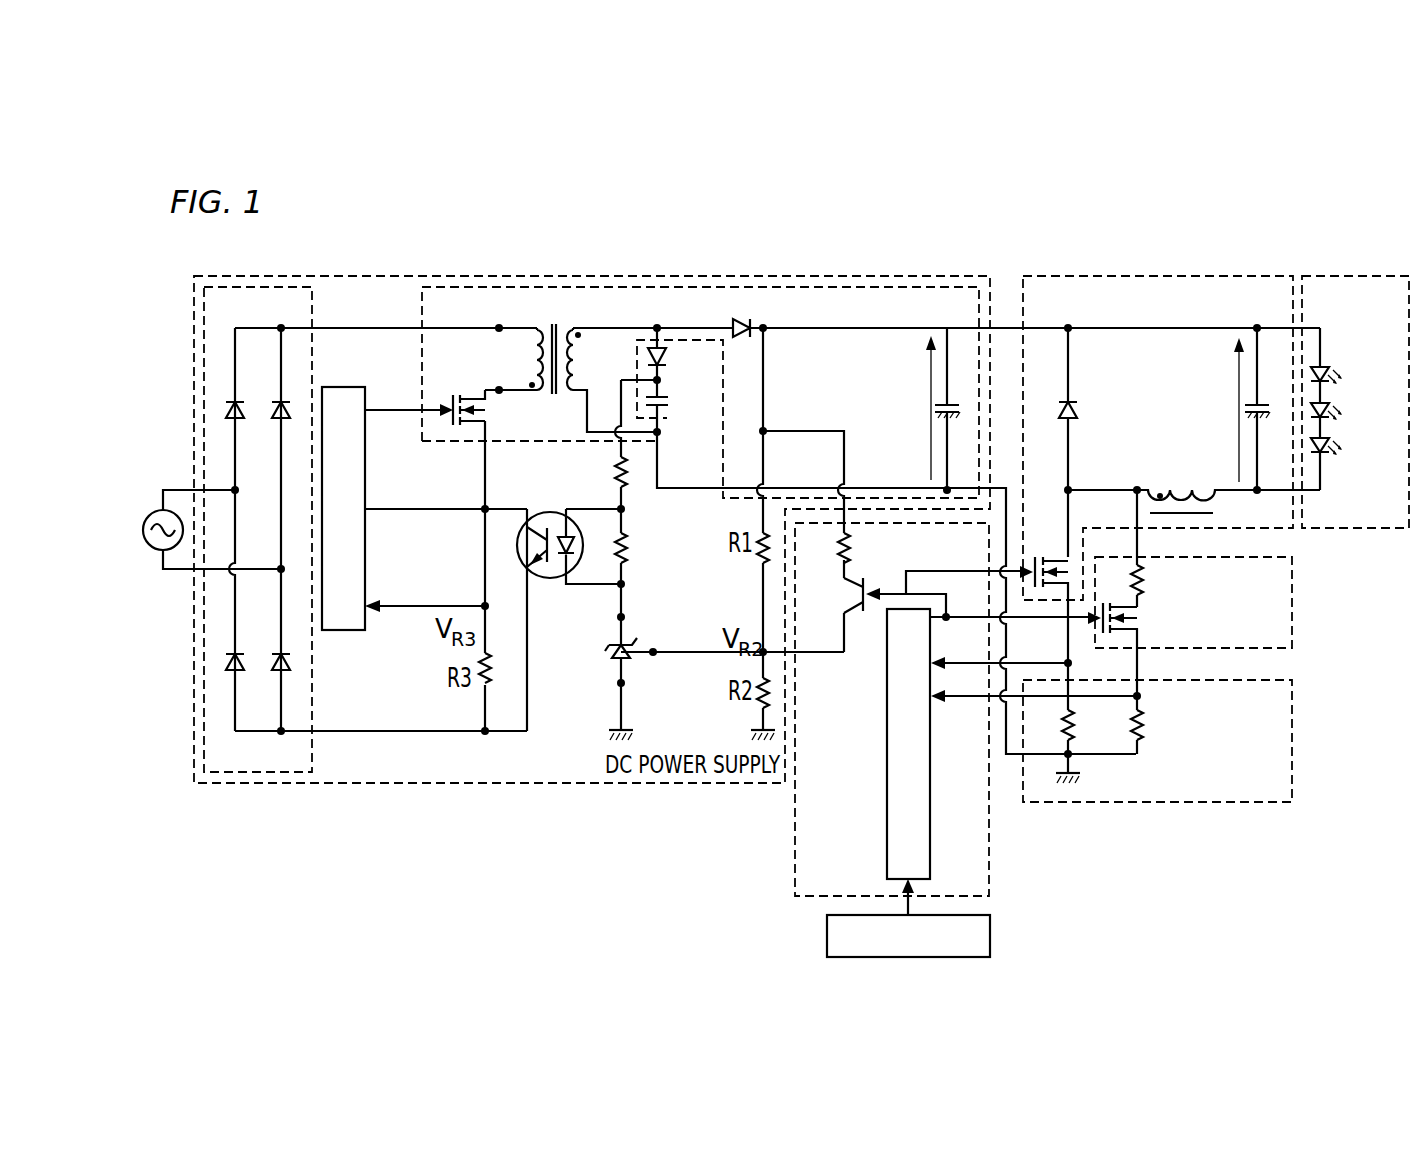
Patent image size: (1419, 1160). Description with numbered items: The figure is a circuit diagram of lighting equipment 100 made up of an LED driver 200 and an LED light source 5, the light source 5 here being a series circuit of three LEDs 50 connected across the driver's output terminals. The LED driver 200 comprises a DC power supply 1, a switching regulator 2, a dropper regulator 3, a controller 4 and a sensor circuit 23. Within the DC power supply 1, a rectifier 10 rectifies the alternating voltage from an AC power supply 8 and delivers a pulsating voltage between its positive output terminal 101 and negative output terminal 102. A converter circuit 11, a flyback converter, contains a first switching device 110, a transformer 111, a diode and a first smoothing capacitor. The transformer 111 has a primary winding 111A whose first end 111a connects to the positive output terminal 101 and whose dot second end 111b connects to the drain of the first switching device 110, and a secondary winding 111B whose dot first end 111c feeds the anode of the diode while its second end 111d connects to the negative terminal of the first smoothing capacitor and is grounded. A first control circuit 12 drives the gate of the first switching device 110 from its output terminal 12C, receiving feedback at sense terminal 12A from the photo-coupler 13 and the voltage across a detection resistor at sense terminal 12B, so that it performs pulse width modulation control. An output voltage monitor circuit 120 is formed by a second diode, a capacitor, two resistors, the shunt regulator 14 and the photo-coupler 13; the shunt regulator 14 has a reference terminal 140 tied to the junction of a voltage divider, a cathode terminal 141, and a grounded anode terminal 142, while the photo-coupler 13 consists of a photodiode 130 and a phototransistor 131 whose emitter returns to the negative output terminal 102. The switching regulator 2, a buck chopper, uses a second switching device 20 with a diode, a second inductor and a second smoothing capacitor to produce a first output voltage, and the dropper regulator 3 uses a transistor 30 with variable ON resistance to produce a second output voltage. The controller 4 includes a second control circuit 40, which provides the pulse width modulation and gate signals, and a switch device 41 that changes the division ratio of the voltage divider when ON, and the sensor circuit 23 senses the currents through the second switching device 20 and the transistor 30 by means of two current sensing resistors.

The DC power supply 1 is at (403, 276).
The switching regulator 2 is at (1171, 437).
The dropper regulator 3 is at (1214, 593).
The controller 4 is at (949, 694).
The LED light source 5 is at (1355, 369).
The AC power supply 8 is at (154, 508).
The rectifier 10 is at (301, 288).
The converter circuit 11 is at (600, 286).
The first control circuit 12 is at (343, 632).
The sense terminal 12A is at (367, 508).
The sense terminal 12B is at (367, 606).
The output terminal 12C is at (366, 408).
The photo-coupler 13 is at (559, 599).
The shunt regulator 14 is at (596, 577).
The second switching device 20 is at (1053, 556).
The sensor circuit 23 is at (1294, 738).
The transistor 30 is at (1134, 612).
The second control circuit 40 is at (886, 757).
The switch device 41 is at (852, 592).
The LED 50 is at (1336, 368).
The lighting equipment 100 is at (1337, 203).
The positive output terminal 101 is at (279, 332).
The negative output terminal 102 is at (280, 734).
The first switching device 110 is at (456, 393).
The transformer 111 is at (602, 361).
The primary winding 111A is at (507, 360).
The secondary winding 111B is at (554, 328).
The first end 111a is at (499, 326).
The second end 111b is at (501, 393).
The first end 111c is at (656, 327).
The second end 111d is at (659, 434).
The output voltage monitor circuit 120 is at (660, 698).
The photodiode 130 is at (564, 532).
The phototransistor 131 is at (537, 569).
The reference terminal 140 is at (655, 655).
The cathode terminal 141 is at (617, 619).
The anode terminal 142 is at (620, 686).
The LED driver 200 is at (1217, 257).